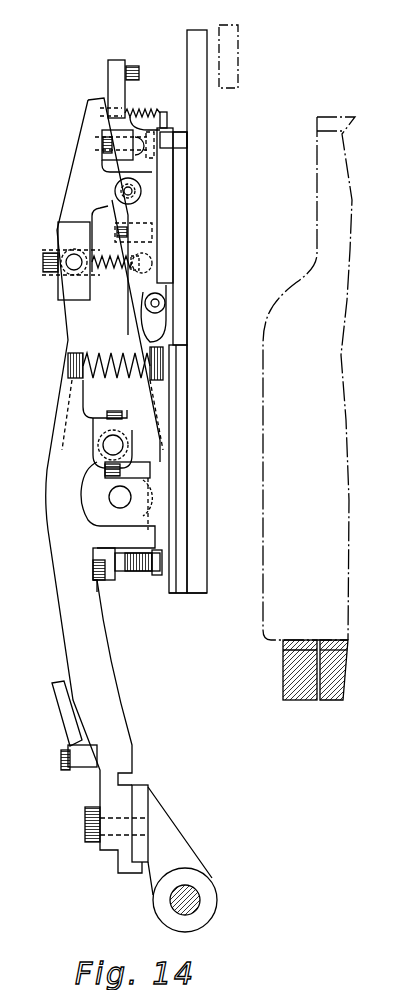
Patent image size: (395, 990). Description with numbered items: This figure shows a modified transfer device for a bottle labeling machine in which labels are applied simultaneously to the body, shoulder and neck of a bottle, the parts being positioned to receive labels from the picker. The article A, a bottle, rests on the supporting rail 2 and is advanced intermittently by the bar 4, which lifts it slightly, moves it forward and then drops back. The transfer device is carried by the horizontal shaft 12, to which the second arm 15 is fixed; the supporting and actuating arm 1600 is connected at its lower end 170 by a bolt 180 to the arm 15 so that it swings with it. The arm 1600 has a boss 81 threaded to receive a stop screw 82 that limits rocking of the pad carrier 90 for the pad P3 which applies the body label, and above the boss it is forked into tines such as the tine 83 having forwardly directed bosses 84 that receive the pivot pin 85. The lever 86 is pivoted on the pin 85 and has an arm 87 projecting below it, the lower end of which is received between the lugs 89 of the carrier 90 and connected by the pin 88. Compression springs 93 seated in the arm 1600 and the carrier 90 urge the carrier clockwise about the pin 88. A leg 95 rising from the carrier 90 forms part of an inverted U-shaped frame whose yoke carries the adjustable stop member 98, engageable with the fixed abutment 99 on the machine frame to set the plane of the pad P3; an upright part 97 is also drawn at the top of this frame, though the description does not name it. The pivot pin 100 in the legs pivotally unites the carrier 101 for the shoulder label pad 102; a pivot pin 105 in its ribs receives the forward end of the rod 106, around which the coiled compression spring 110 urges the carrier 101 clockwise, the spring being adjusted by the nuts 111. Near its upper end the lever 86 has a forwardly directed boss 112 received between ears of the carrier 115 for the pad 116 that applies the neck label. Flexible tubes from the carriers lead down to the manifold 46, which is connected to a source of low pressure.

The article A is at (333, 376).
The supporting rail 2 is at (300, 702).
The bar 4 is at (331, 700).
The horizontal shaft 12 is at (192, 897).
The second arm 15 is at (178, 838).
The manifold 46 is at (72, 766).
The boss 81 is at (107, 583).
The stop screw 82 is at (146, 566).
The tine 83 is at (63, 517).
The forwardly directed boss 84 is at (102, 420).
The pivot pin 85 is at (110, 445).
The lever 86 is at (70, 327).
The arm 87 is at (97, 477).
The pin 88 is at (122, 497).
The lug 89 is at (143, 519).
The pad carrier 90 is at (170, 592).
The compression spring 93 is at (118, 350).
The leg 95 is at (150, 335).
The bar 97 is at (114, 66).
The adjustable stop member 98 is at (134, 64).
The fixed abutment 99 is at (232, 62).
The pivot pin 100 is at (158, 302).
The carrier 101 is at (160, 233).
The shoulder label pad 102 is at (176, 251).
The pivot pin 105 is at (68, 266).
The rod 106 is at (42, 258).
The coiled compression spring 110 is at (118, 194).
The adjustable nut 111 is at (98, 148).
The forwardly directed boss 112 is at (127, 191).
The carrier 115 is at (165, 141).
The pad 116 is at (180, 163).
The lower end 170 is at (115, 845).
The bolt 180 is at (93, 834).
The supporting and actuating arm 1600 is at (95, 663).
The pad P3 is at (178, 408).